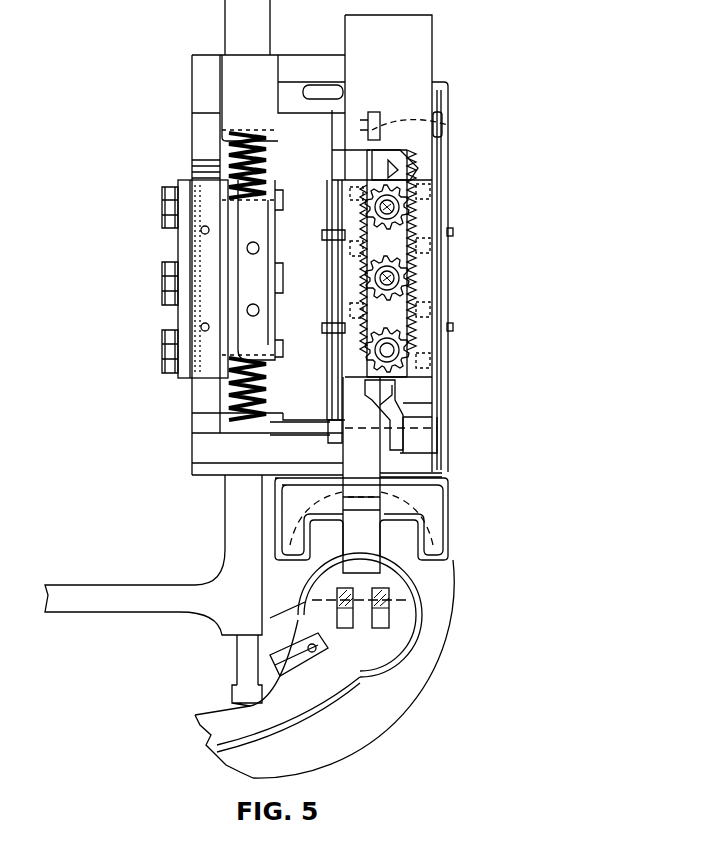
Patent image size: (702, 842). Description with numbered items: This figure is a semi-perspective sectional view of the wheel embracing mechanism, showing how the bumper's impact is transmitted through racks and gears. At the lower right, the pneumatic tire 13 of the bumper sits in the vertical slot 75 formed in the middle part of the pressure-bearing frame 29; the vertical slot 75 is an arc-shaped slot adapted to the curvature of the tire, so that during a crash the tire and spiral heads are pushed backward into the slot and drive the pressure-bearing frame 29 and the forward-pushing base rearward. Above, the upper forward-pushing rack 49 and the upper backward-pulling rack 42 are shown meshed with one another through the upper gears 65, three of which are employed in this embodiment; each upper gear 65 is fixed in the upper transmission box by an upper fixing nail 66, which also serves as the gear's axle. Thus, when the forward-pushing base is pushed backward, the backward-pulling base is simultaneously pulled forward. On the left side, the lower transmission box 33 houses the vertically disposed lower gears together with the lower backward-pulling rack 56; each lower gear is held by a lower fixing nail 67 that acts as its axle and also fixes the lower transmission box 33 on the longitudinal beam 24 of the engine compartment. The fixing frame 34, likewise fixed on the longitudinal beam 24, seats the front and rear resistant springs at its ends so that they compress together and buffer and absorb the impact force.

The lower backward-pulling rack 56 is at (205, 138).
The lower fixing nail 67 is at (168, 207).
The fixing frame 34 is at (237, 287).
The lower transmission box 33 is at (190, 307).
The upper backward-pulling rack 42 is at (418, 167).
The upper fixing nail 66 is at (408, 203).
The upper gear 65 is at (403, 260).
The upper forward-pushing rack 49 is at (408, 313).
The vertical slot 75 is at (403, 497).
The pressure-bearing frame 29 is at (447, 533).
The pneumatic tire 13 is at (440, 617).
The longitudinal beam 24 is at (248, 538).